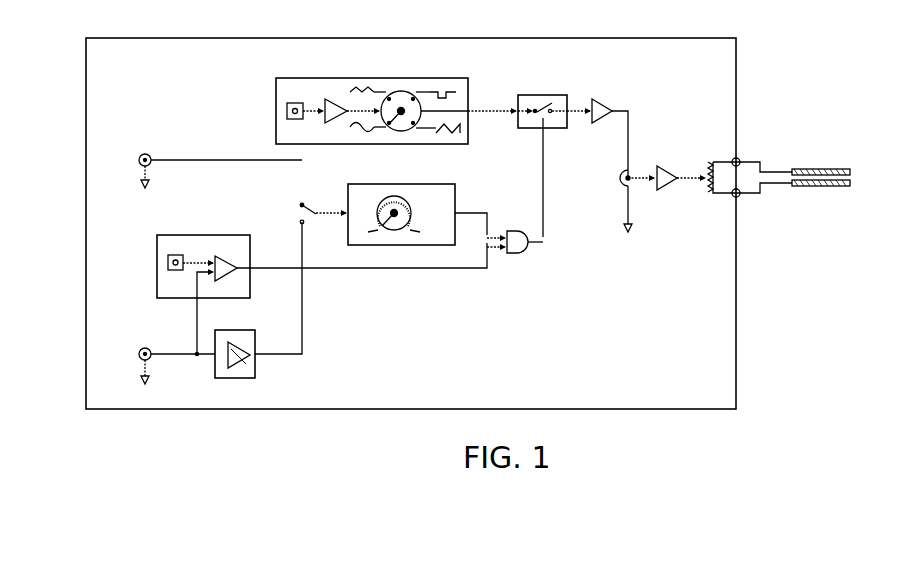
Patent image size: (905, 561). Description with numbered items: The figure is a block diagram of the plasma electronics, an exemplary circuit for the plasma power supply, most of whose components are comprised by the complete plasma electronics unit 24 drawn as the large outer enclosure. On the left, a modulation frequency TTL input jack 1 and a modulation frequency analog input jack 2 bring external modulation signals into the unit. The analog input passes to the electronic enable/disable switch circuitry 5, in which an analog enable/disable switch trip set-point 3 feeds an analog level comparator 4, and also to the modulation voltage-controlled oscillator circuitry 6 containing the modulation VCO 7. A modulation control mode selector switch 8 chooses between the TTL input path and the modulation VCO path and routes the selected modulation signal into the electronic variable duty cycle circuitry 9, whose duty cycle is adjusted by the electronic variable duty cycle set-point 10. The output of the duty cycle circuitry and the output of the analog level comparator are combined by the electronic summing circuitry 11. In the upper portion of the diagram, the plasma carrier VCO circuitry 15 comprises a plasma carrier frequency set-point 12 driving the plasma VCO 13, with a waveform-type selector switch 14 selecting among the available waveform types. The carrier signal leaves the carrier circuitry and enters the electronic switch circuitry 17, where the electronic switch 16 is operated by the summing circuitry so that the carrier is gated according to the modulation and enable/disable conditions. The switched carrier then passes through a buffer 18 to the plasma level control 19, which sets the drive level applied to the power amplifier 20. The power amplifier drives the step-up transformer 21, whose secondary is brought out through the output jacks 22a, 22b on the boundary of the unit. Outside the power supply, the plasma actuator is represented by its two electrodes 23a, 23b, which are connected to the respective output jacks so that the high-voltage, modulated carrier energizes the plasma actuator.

The modulation frequency TTL input jack 1 is at (141, 155).
The modulation frequency analog input jack 2 is at (141, 350).
The analog enable/disable switch trip set-point 3 is at (168, 258).
The analog level comparator 4 is at (230, 262).
The electronic enable/disable switch circuitry 5 is at (188, 236).
The modulation voltage-controlled oscillator (VCO) circuitry 6 is at (255, 334).
The modulation VCO 7 is at (258, 366).
The modulation control mode selector switch 8 is at (298, 215).
The electronic variable duty cycle circuitry 9 is at (388, 184).
The electronic variable duty cycle set-point 10 is at (405, 198).
The electronic summing circuitry 11 is at (528, 247).
The plasma carrier frequency set-point 12 is at (293, 103).
The plasma VCO 13 is at (335, 100).
The waveform-type selector switch 14 is at (408, 98).
The plasma carrier VCO circuitry 15 is at (385, 78).
The electronic switch 16 is at (540, 100).
The electronic switch circuitry 17 is at (555, 93).
The buffer 18 is at (603, 98).
The plasma level control 19 is at (618, 185).
The power amplifier 20 is at (665, 168).
The step-up transformer 21 is at (710, 195).
The output jack 22a is at (745, 158).
The output jack 22b is at (745, 197).
The plasma actuator electrode 23a is at (822, 168).
The plasma actuator electrode 23b is at (822, 188).
The plasma electronics unit 24 is at (298, 409).